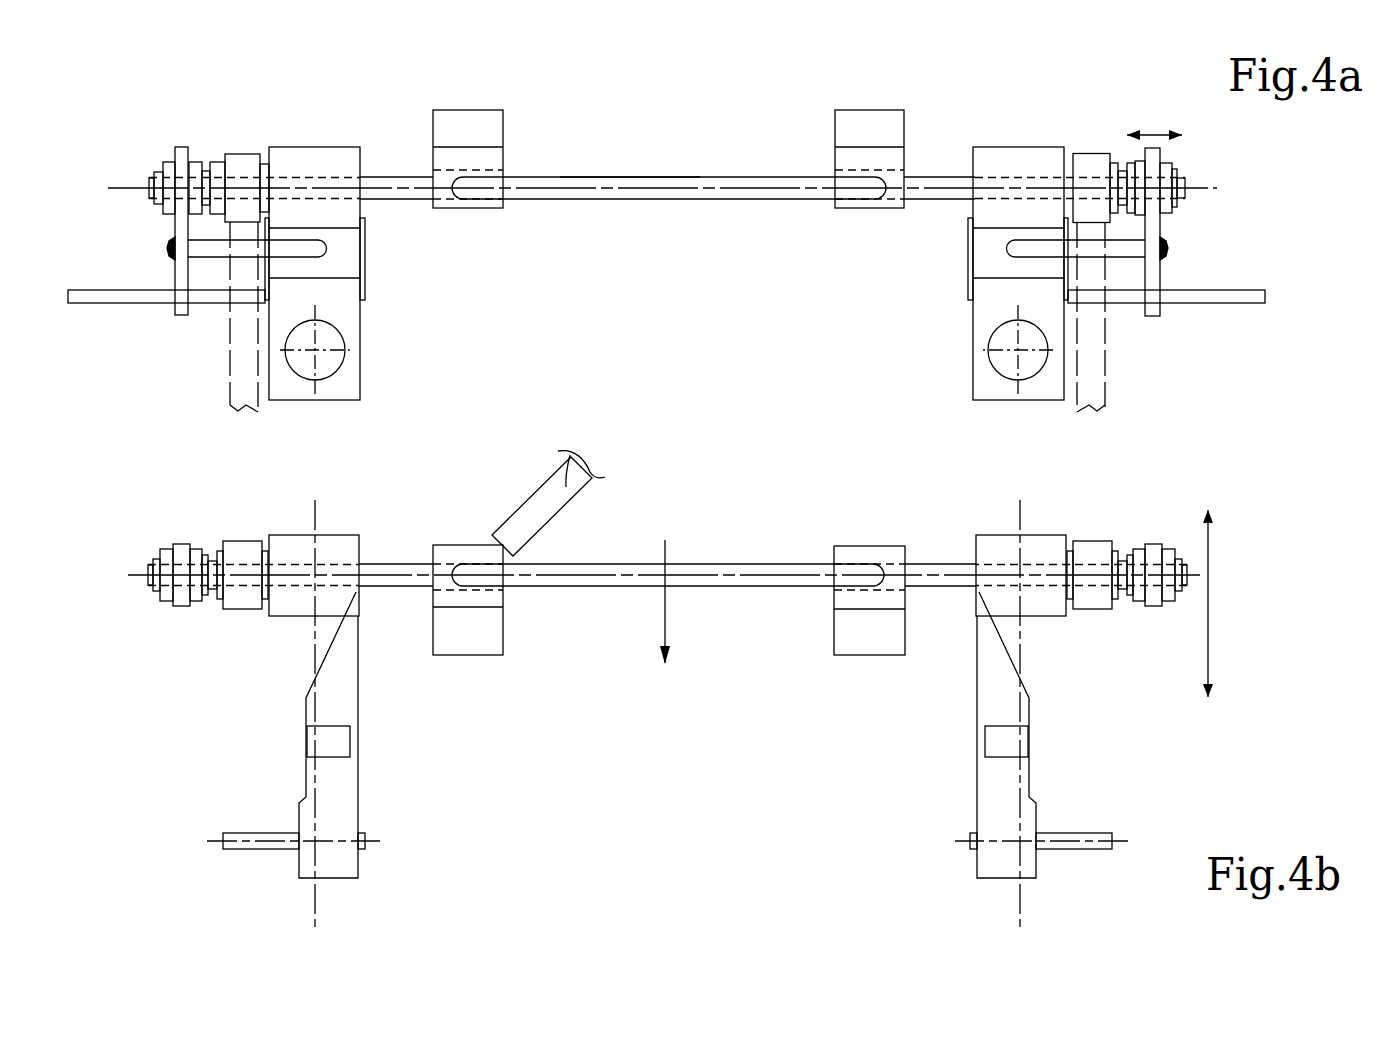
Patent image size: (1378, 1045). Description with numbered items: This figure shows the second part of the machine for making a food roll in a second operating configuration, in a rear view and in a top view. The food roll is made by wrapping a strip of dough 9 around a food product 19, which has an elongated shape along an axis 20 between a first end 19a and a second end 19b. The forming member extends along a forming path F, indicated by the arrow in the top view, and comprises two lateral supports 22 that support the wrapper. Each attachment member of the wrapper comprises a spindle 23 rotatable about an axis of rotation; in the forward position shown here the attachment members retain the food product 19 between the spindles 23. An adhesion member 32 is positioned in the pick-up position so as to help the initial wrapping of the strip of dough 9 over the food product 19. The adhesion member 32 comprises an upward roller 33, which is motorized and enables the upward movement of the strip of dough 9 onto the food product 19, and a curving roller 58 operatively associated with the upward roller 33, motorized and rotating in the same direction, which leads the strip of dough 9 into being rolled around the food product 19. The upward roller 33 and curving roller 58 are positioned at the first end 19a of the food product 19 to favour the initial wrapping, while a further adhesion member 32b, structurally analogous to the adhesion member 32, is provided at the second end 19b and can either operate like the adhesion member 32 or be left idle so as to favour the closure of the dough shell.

In FIG. 4B, the strip of dough 9 is at (565, 478).
In FIG. 4A, the food product 19 is at (717, 197).
In FIG. 4B, the food product 19 is at (745, 572).
In FIG. 4A, the first end of the food product 19a is at (487, 197).
In FIG. 4A, the second end of the food product 19b is at (877, 197).
In FIG. 4A, the axis 20 is at (606, 180).
In FIG. 4A, the lateral support 22 is at (287, 388).
In FIG. 4B, the lateral support 22 is at (342, 870).
In FIG. 4A, the spindle 23 is at (388, 205).
In FIG. 4B, the spindle 23 is at (394, 557).
In FIG. 4A, the adhesion member 32 is at (516, 110).
In FIG. 4B, the adhesion member 32 is at (487, 524).
In FIG. 4A, the further adhesion member 32b is at (915, 113).
In FIG. 4A, the upward roller 33 is at (451, 210).
In FIG. 4B, the upward roller 33 is at (483, 640).
In FIG. 4A, the curving roller 58 is at (443, 123).
In FIG. 4B, the curving roller 58 is at (448, 553).
In FIG. 4B, the forming path F is at (662, 607).